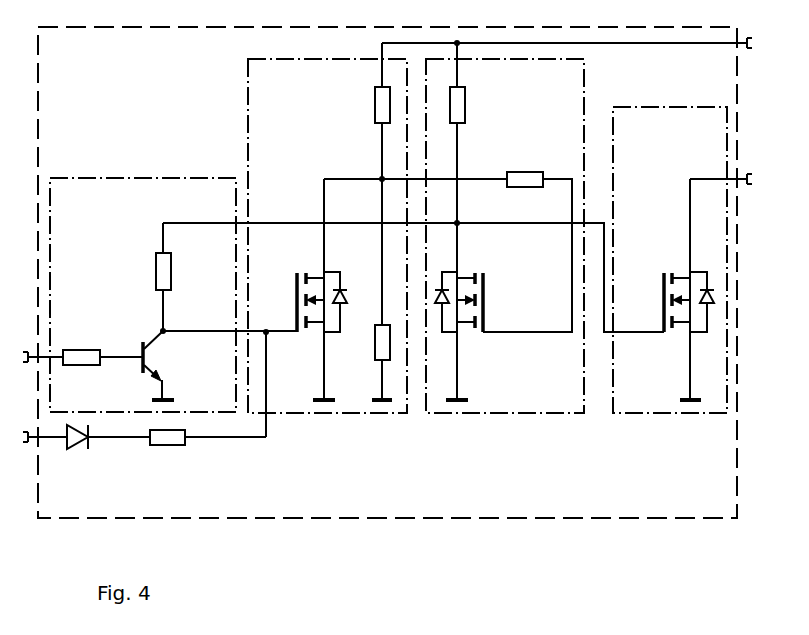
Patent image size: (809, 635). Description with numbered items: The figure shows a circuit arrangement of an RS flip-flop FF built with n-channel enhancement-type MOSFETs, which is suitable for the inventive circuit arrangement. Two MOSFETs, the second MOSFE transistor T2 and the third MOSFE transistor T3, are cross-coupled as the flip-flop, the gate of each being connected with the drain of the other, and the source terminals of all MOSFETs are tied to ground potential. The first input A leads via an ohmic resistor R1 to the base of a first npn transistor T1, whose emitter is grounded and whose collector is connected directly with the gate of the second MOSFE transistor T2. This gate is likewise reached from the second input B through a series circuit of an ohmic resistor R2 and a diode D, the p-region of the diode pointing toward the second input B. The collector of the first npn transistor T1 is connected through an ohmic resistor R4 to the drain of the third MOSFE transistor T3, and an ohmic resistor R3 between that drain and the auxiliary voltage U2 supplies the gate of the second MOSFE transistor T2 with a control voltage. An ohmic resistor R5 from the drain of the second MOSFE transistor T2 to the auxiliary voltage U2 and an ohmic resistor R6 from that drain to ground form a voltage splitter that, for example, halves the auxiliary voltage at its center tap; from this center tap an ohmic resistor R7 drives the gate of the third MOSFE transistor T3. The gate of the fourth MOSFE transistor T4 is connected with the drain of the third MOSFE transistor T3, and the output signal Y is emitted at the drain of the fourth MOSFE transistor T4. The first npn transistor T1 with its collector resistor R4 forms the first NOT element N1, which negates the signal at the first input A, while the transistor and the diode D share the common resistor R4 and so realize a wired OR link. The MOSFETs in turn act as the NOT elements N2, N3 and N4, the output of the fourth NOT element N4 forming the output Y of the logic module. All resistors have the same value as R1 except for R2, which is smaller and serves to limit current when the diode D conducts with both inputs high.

The RS flip-flop FF is at (387, 272).
The first NOT element N1 is at (143, 295).
The second NOT element N2 is at (327, 236).
The third NOT element N3 is at (505, 236).
The fourth NOT element N4 is at (670, 260).
The auxiliary voltage U2 is at (583, 35).
The output Y is at (731, 179).
The first input A is at (32, 350).
The second input B is at (34, 445).
The ohmic resistor R1 is at (103, 341).
The ohmic resistor R2 is at (208, 456).
The ohmic resistor R3 is at (474, 157).
The ohmic resistor R4 is at (395, 278).
The ohmic resistor R5 is at (367, 184).
The ohmic resistor R6 is at (368, 362).
The ohmic resistor R7 is at (448, 238).
The first npn transistor T1 is at (220, 383).
The second MOSFE transistor T2 is at (302, 289).
The third MOSFE transistor T3 is at (480, 334).
The fourth MOSFE transistor T4 is at (670, 289).
The diode D is at (108, 453).